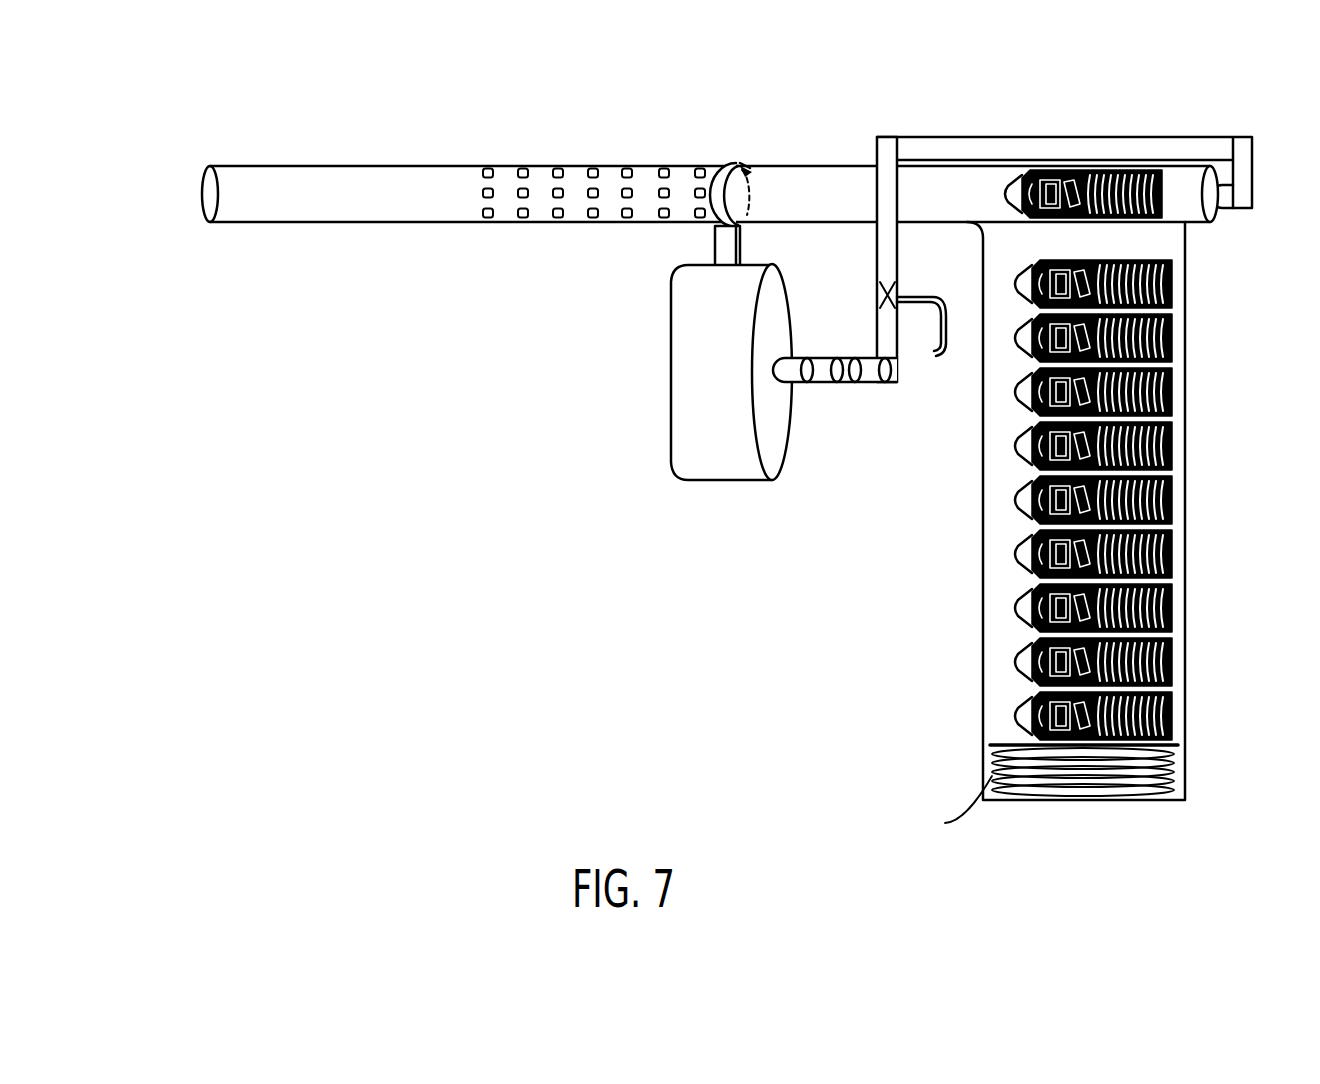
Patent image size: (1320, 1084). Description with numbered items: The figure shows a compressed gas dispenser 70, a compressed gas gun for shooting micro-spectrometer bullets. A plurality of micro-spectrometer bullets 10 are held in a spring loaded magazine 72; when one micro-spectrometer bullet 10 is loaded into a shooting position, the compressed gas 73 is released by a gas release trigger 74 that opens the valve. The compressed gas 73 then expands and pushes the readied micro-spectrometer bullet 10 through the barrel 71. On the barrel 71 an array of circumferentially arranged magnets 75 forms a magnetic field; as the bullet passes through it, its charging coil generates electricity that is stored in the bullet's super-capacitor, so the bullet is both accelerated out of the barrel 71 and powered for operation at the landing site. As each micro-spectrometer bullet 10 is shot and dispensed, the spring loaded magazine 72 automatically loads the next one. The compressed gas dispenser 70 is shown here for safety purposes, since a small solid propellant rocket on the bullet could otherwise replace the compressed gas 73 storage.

The compressed gas dispenser 70 is at (684, 282).
The barrel 71 is at (303, 187).
The magazine 72 is at (1026, 528).
The compressed gas 73 is at (703, 400).
The gas release trigger 74 is at (931, 372).
The array of circumferentially arranged magnets 75 is at (549, 205).
The micro-spectrometer bullet 10 is at (1218, 700).